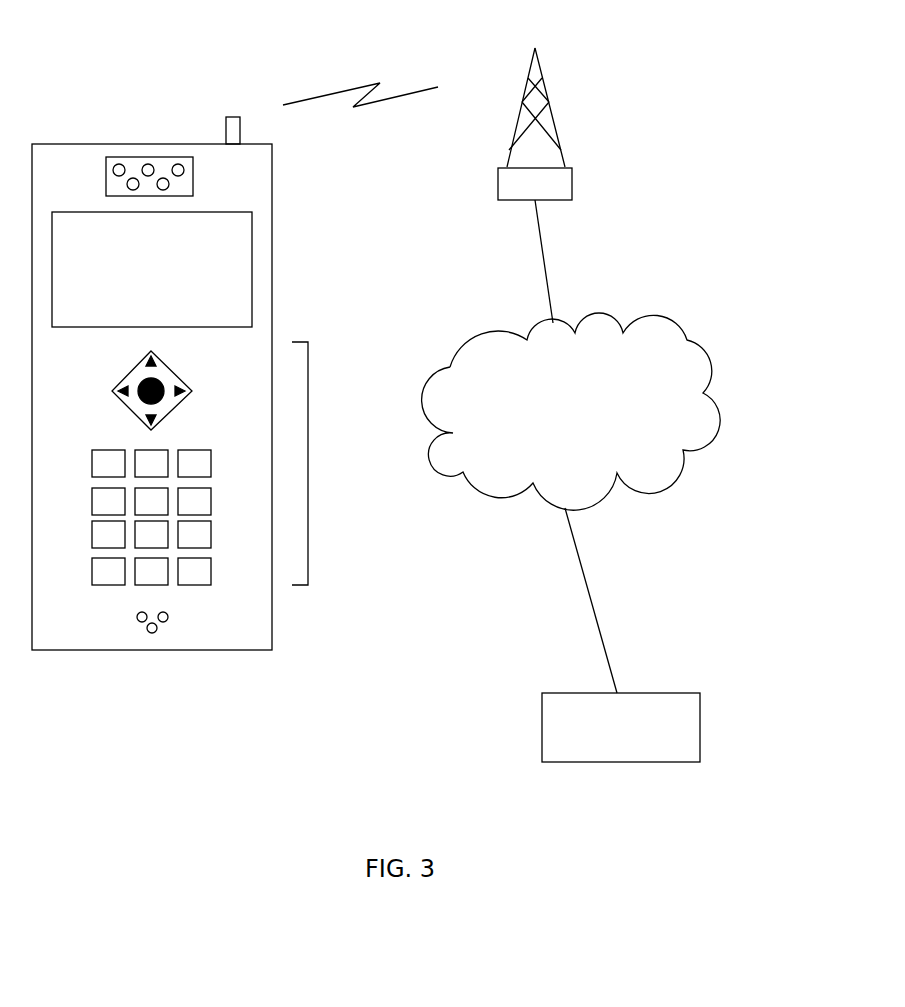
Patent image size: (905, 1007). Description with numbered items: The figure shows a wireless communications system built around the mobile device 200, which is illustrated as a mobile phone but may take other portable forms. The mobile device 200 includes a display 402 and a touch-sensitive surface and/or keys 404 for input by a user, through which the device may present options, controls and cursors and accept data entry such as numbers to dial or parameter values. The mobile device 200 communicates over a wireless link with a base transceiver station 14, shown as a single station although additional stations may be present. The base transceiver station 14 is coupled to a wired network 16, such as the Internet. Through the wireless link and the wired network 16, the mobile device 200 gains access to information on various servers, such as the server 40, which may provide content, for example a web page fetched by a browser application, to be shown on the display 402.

The mobile device 200 is at (77, 147).
The display 402 is at (253, 260).
The keys 404 is at (308, 373).
The base transceiver station 14 is at (572, 177).
The wired network 16 is at (687, 340).
The server 40 is at (700, 723).